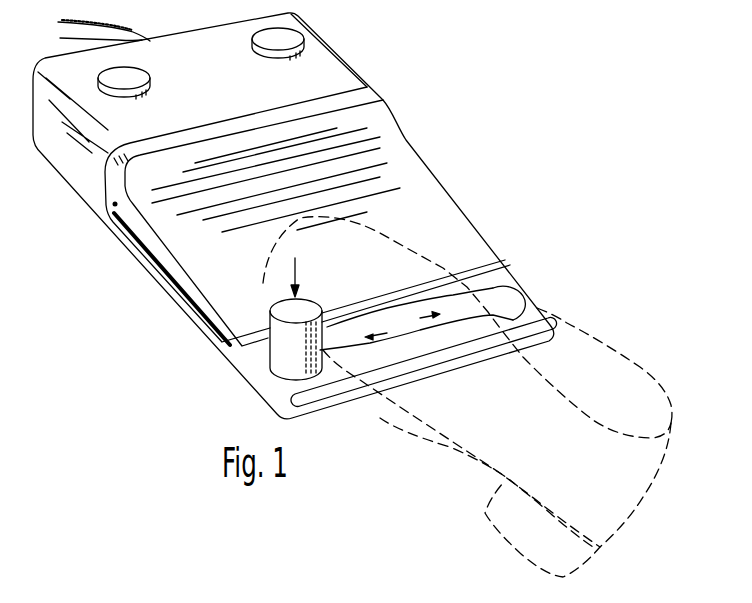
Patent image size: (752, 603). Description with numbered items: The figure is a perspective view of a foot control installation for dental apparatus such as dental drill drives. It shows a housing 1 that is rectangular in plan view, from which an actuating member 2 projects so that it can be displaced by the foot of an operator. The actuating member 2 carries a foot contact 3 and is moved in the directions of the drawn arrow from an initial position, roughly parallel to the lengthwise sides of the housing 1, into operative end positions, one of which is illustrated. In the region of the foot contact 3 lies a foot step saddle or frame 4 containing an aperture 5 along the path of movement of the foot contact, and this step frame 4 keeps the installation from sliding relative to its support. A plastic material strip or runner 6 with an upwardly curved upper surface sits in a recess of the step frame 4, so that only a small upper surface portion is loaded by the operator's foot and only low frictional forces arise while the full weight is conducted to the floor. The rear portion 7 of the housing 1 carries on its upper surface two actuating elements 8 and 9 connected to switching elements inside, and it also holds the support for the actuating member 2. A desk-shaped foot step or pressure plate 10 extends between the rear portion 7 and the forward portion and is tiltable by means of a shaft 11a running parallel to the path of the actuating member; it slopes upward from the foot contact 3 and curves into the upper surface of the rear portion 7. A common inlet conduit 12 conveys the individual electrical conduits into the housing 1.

The housing 1 is at (441, 179).
The actuating member 2 is at (280, 376).
The foot contact 3 is at (270, 378).
The foot step saddle or frame 4 is at (436, 340).
The aperture 5 is at (479, 318).
The plastic material strip or runner 6 is at (481, 317).
The rear portion of the housing 7 is at (342, 78).
The actuating element 8 is at (122, 92).
The actuating element 9 is at (284, 60).
The foot step or pressure plate 10 is at (205, 283).
The shaft 11a is at (114, 214).
The common inlet conduit 12 is at (135, 33).